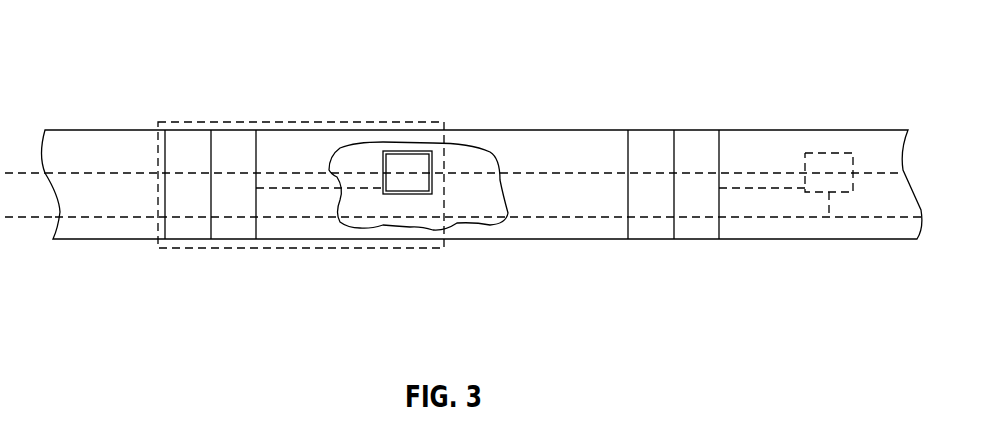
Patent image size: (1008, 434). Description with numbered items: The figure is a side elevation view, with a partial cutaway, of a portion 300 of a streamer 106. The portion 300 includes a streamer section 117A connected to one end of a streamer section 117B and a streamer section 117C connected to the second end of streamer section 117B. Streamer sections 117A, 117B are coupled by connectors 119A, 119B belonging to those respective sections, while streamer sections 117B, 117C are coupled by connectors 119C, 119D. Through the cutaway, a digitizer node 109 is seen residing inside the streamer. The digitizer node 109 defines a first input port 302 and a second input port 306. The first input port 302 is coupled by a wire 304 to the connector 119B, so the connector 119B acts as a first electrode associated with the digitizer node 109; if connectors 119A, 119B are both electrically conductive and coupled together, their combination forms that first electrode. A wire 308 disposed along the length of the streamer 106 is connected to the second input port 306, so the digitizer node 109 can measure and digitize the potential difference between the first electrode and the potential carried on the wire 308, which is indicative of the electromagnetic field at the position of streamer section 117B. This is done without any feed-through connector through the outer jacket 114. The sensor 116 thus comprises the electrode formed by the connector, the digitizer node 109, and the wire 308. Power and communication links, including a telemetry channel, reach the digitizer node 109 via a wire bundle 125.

The portion 300 is at (128, 38).
The outer jacket 114 is at (530, 128).
The streamer section 117A is at (85, 122).
The streamer section 117B is at (450, 121).
The streamer section 117C is at (806, 122).
The sensor 116 is at (192, 121).
The streamer 106 is at (265, 88).
The connector 119A is at (182, 258).
The connector 119B is at (239, 258).
The connector 119C is at (642, 258).
The connector 119D is at (698, 258).
The wire bundle 125 is at (367, 172).
The digitizer node 109 is at (407, 172).
The first input port 302 is at (383, 193).
The wire 304 is at (335, 216).
The second input port 306 is at (408, 197).
The wire 308 is at (462, 220).